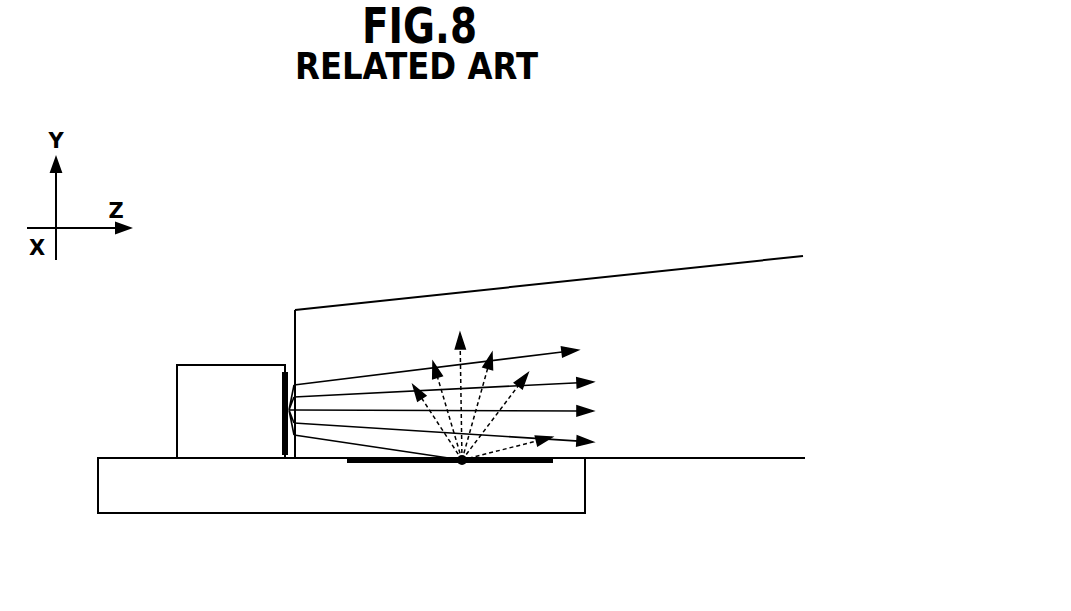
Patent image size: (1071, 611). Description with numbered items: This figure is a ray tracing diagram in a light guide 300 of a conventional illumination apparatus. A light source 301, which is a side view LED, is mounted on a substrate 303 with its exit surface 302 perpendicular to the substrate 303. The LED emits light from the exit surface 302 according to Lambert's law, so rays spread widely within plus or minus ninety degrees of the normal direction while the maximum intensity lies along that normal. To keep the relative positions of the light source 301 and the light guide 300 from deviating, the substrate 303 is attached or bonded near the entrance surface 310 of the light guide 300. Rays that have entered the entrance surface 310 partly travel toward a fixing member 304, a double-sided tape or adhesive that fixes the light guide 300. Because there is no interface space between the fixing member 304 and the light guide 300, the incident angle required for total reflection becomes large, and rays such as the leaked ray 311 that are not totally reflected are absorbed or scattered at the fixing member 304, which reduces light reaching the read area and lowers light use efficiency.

The light guide 300 is at (499, 300).
The light source 301 is at (196, 378).
The exit surface 302 is at (283, 405).
The substrate 303 is at (207, 502).
The fixing member 304 is at (415, 462).
The entrance surface 310 is at (296, 350).
The leaked light 311 is at (330, 440).